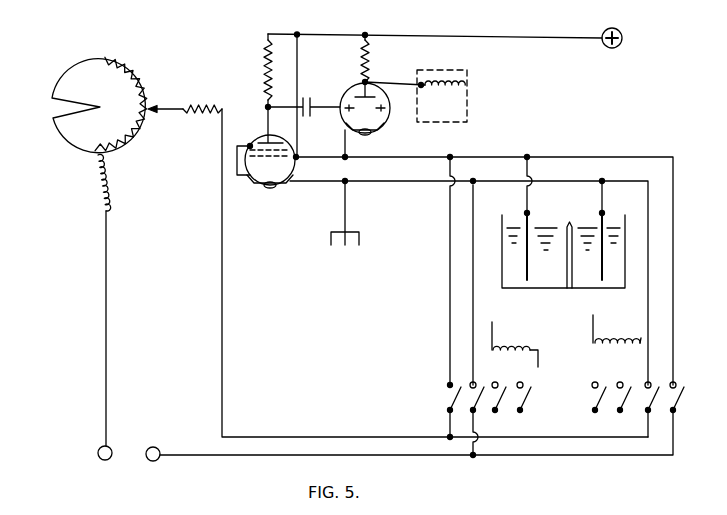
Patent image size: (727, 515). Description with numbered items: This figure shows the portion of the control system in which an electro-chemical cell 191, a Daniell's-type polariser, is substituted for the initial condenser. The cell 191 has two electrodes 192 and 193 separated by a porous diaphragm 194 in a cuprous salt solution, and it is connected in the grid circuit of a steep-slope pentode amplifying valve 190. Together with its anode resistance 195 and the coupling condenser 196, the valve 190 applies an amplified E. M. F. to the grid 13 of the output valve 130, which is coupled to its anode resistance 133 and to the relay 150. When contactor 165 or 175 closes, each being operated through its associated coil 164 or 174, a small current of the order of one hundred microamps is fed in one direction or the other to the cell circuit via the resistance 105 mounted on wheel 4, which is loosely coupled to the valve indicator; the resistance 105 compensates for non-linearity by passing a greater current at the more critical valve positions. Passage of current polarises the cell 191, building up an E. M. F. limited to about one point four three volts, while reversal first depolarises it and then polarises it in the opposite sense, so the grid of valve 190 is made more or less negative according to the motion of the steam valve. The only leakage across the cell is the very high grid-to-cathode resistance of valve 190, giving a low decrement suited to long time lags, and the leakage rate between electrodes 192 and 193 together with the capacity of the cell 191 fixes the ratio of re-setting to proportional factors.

The wheel 4 is at (56, 86).
The resistance 105 is at (157, 73).
The anode resistance 195 is at (252, 70).
The coupling condenser 196 is at (304, 100).
The anode resistance 133 is at (380, 58).
The vacuum tube 13 is at (365, 119).
The relay 150 is at (416, 87).
The steep-slope pentode amplifying valve 190 is at (266, 160).
The output valve 130 is at (484, 262).
The electro-chemical cell 191 is at (594, 292).
The electrode 192 is at (524, 227).
The electrode 193 is at (607, 228).
The porous diaphragm 194 is at (566, 243).
The relay coil 164 is at (515, 344).
The contactor 165 is at (488, 381).
The relay coil 174 is at (617, 329).
The contactor 175 is at (646, 383).